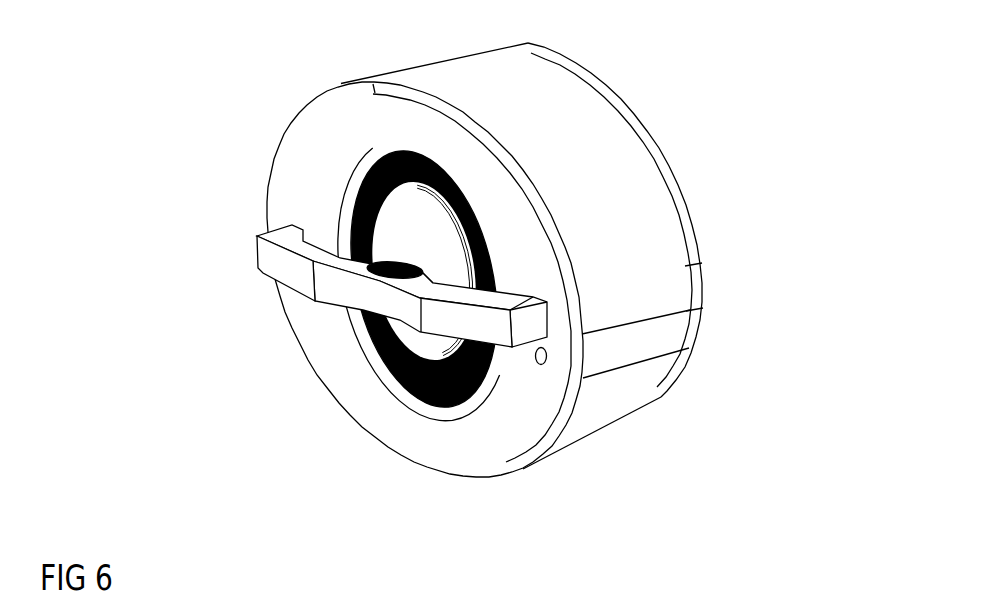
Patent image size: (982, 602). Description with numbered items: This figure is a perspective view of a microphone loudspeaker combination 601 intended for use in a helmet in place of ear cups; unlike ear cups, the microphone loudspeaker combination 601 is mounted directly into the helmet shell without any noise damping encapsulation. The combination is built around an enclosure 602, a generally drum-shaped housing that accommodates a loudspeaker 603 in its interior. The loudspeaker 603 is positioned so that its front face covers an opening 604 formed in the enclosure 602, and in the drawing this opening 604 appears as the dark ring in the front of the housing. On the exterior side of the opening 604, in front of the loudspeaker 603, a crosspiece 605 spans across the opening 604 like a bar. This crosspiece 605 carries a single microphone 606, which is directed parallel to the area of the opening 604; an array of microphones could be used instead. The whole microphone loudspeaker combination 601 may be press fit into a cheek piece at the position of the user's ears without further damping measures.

The microphone loudspeaker combination 601 is at (711, 86).
The enclosure 602 is at (620, 197).
The loudspeaker 603 is at (407, 237).
The opening 604 is at (395, 153).
The crosspiece 605 is at (283, 263).
The microphone 606 is at (387, 278).